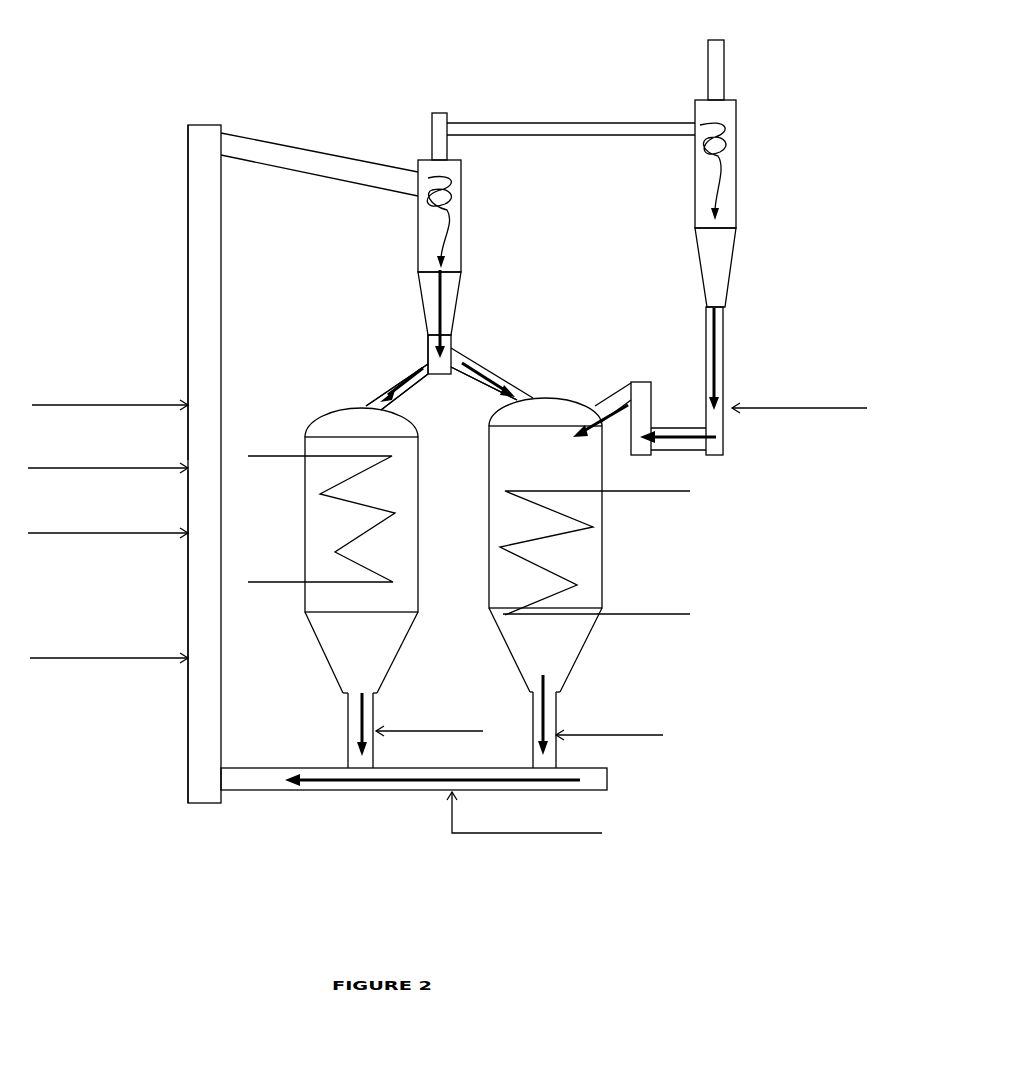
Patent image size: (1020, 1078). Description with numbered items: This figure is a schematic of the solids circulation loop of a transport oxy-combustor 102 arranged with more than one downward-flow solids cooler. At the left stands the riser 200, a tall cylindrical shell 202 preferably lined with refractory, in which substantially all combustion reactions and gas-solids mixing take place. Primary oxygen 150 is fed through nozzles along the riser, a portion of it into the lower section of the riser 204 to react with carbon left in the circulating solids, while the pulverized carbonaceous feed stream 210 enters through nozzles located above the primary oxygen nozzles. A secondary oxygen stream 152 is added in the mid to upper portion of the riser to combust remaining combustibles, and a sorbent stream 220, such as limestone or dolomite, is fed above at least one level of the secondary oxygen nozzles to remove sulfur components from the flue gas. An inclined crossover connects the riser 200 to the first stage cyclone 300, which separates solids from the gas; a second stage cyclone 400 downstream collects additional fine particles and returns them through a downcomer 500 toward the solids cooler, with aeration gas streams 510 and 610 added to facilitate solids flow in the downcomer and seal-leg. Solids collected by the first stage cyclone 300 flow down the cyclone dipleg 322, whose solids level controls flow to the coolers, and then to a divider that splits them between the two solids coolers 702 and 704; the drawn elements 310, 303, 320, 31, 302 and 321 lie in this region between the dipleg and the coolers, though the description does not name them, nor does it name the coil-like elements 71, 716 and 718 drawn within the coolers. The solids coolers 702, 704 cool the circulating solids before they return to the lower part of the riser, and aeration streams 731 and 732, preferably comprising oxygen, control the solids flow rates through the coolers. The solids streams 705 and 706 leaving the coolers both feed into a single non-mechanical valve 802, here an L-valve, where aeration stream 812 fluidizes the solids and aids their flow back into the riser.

The transport oxy-combustor 102 is at (807, 51).
The riser 200 is at (188, 292).
The cylindrical shell 202 is at (203, 292).
The lower section of the riser 204 is at (202, 636).
The secondary oxygen stream 152 is at (110, 397).
The sorbent stream 220 is at (108, 461).
The pulverized carbonaceous feed stream 210 is at (108, 525).
The primary oxygen 150 is at (109, 648).
The first stage cyclone 300 is at (418, 162).
The second stage cyclone 400 is at (695, 105).
The cyclone dipleg 310 is at (443, 300).
The cyclone dipleg 322 is at (428, 338).
The flow splitter 303 is at (413, 365).
The first catalyst conduit 320 is at (369, 392).
The conduit wall 31 is at (392, 393).
The second catalyst conduit 302 is at (481, 364).
The conduit wall 321 is at (503, 380).
The solids cooler 702 is at (318, 417).
The solids cooler 704 is at (547, 398).
The heat exchange coil 71 is at (321, 509).
The coil inlet 716 is at (595, 542).
The coil outlet 718 is at (596, 603).
The solids stream 705 is at (362, 737).
The solids stream 706 is at (543, 722).
The aeration stream 732 is at (429, 723).
The aeration stream 731 is at (609, 726).
The non-mechanical valve 802 is at (328, 791).
The aeration stream 812 is at (547, 826).
The downcomer 500 is at (722, 348).
The aeration gas stream 510 is at (799, 402).
The aeration gas stream 610 is at (732, 425).